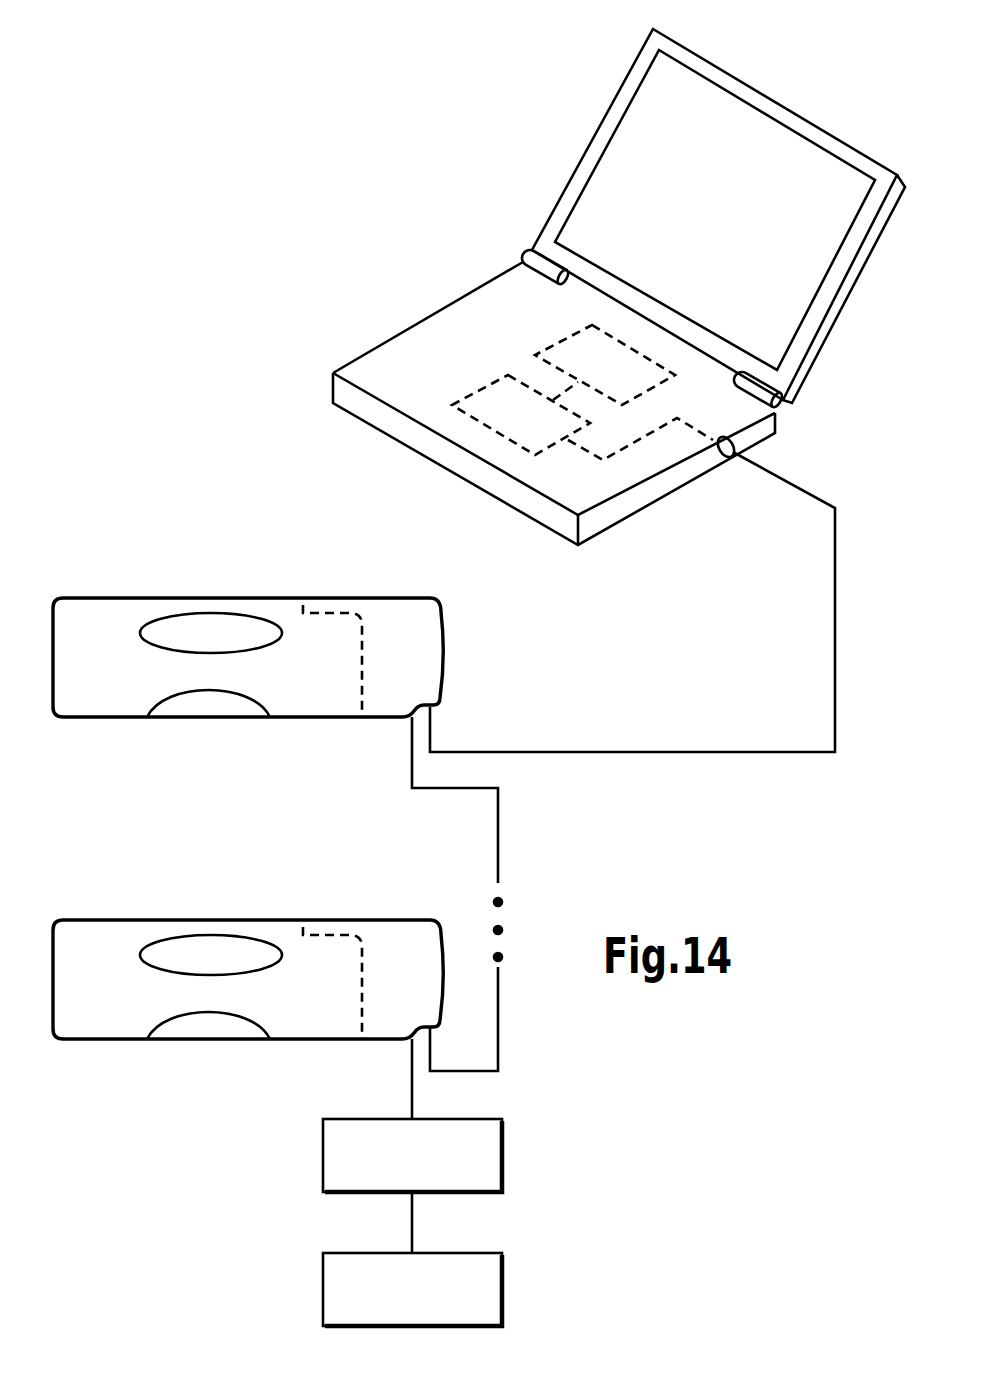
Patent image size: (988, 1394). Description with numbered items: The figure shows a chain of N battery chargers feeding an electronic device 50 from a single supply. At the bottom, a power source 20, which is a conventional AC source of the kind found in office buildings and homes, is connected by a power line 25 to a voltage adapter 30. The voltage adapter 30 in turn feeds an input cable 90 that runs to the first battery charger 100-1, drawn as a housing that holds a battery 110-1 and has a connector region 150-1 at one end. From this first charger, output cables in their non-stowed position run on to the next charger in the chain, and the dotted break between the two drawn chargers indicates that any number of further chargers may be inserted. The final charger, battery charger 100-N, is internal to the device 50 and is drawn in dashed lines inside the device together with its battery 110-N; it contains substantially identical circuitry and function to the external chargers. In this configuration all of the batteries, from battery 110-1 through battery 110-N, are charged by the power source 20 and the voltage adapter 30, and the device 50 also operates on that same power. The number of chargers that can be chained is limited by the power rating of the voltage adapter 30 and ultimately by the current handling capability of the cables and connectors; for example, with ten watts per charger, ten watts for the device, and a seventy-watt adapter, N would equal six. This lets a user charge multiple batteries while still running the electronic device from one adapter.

The electronic device 50 is at (384, 346).
The battery charger 100-N is at (472, 393).
The battery 110-N is at (550, 348).
The battery charger 100-1 is at (53, 930).
The connector 150-1 is at (392, 920).
The battery 110-1 is at (213, 1025).
The input cable 90 is at (412, 1083).
The voltage adapter 30 is at (502, 1157).
The power line 25 is at (412, 1225).
The power source 20 is at (502, 1295).